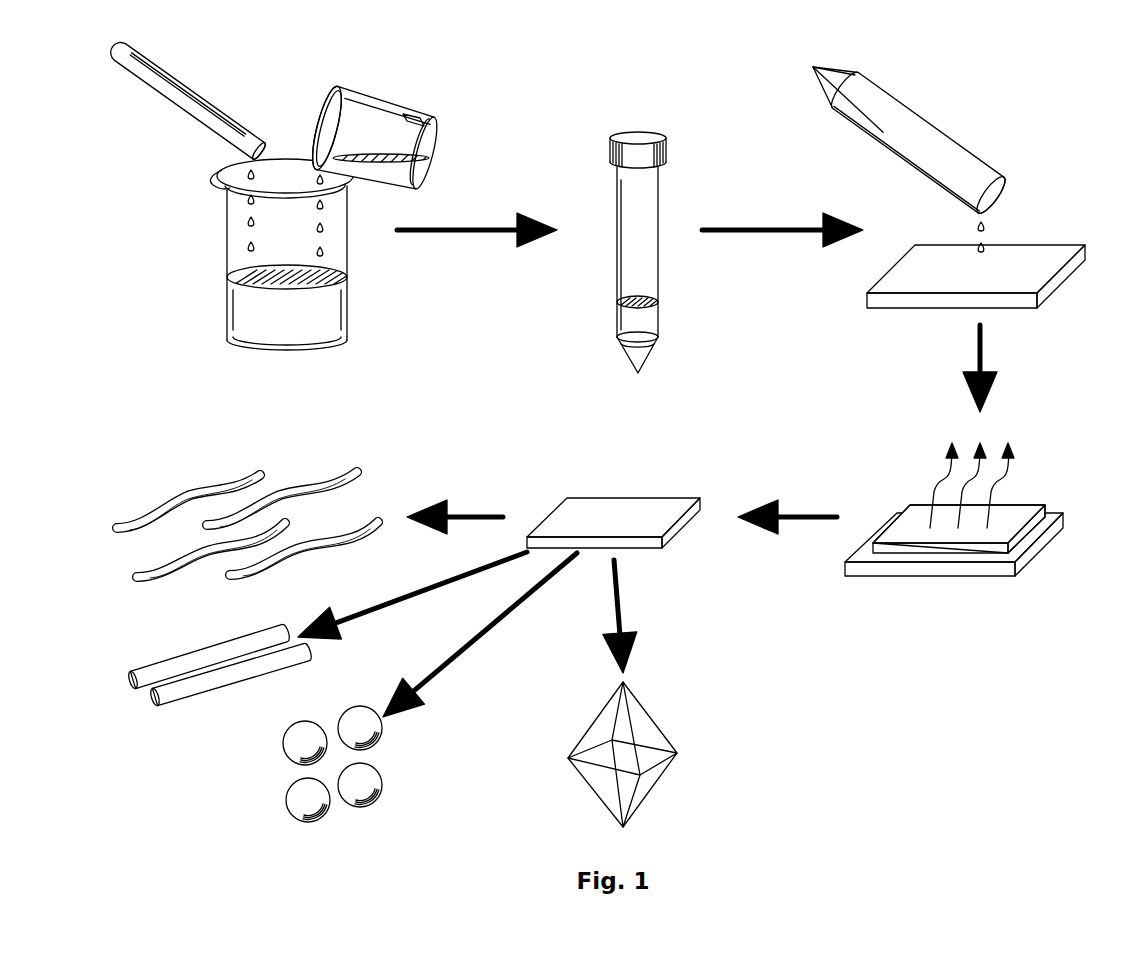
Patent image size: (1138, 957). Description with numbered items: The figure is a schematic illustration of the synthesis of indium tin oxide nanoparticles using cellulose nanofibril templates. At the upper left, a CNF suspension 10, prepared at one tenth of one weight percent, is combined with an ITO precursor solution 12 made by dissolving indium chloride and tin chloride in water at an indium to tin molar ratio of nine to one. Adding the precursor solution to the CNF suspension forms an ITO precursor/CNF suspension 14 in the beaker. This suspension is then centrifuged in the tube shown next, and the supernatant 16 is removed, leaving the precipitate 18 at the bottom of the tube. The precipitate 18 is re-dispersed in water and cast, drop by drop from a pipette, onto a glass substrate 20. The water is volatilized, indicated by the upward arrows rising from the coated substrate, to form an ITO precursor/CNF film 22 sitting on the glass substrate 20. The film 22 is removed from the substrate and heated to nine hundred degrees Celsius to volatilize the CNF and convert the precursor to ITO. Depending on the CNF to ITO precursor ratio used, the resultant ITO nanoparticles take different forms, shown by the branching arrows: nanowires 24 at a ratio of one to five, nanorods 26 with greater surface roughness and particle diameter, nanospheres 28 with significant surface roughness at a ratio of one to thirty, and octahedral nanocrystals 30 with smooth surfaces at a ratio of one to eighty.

The CNF suspension 10 is at (403, 173).
The ITO precursor solution 12 is at (198, 92).
The ITO precursor/CNF suspension 14 is at (313, 332).
The supernatant 16 is at (625, 318).
The precipitate 18 is at (640, 355).
The glass substrate 20 is at (1063, 275).
The ITO precursor/CNF film 22 is at (1035, 508).
The nanowires 24 is at (305, 483).
The nanorods 26 is at (202, 693).
The nanospheres 28 is at (385, 787).
The nanocrystals 30 is at (657, 722).